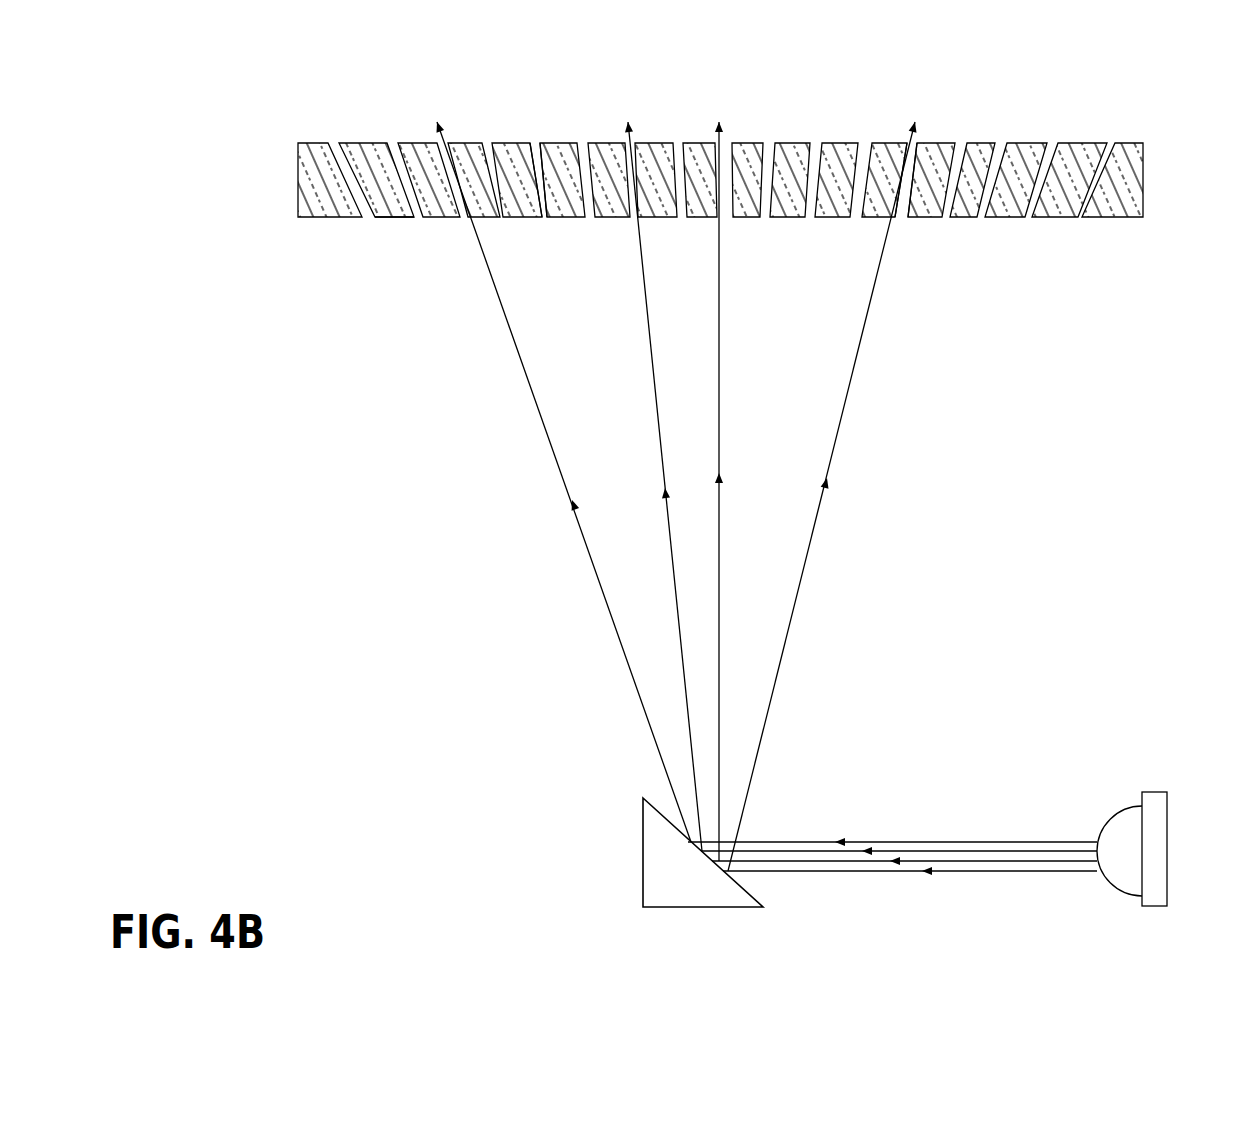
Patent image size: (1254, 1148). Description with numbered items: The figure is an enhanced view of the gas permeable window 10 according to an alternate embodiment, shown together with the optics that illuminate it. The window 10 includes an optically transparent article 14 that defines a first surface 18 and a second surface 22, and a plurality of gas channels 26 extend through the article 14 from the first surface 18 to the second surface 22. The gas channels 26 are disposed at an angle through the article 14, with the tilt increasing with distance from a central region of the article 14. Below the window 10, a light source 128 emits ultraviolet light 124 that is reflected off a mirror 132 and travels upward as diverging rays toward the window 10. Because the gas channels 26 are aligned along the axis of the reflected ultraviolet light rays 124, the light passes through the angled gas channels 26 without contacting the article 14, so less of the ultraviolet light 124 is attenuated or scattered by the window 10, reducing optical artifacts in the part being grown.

The gas permeable window 10 is at (1182, 125).
The optically transparent article 14 is at (1020, 143).
The first surface 18 is at (354, 143).
The second surface 22 is at (388, 219).
The gas channels 26 is at (536, 135).
The ultraviolet light 124 is at (503, 318).
The light source 128 is at (1157, 823).
The mirror 132 is at (660, 855).